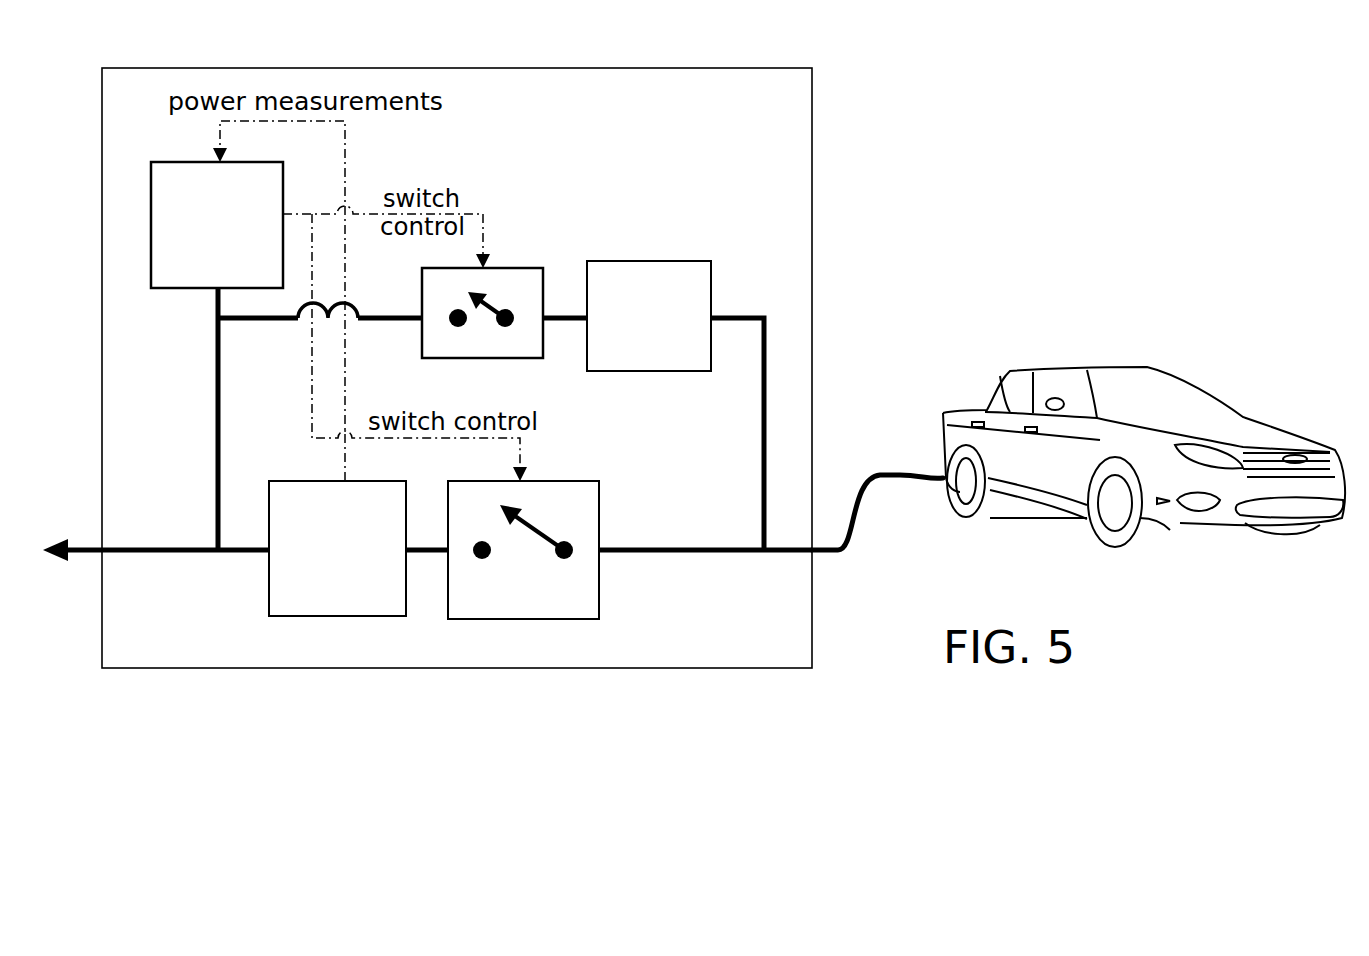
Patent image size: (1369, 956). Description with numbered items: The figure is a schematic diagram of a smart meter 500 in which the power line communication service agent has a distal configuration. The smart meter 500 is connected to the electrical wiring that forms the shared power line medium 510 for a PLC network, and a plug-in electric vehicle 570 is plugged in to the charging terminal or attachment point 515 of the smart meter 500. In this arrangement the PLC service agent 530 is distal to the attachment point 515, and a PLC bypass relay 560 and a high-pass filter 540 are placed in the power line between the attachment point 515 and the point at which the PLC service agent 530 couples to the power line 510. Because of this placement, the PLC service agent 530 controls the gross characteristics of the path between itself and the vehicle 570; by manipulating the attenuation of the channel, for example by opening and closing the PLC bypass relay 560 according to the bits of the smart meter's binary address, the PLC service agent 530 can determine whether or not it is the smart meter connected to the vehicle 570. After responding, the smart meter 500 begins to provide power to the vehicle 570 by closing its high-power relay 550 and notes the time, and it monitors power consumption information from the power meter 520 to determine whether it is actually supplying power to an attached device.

The smart meter 500 is at (258, 68).
The power line 510 is at (82, 543).
The attachment point 515 is at (898, 470).
The power meter 520 is at (345, 617).
The PLC service agent 530 is at (191, 290).
The high-pass filter 540 is at (679, 261).
The high-power relay 550 is at (600, 583).
The PLC bypass relay 560 is at (534, 268).
The plug-in electric vehicle 570 is at (1127, 367).